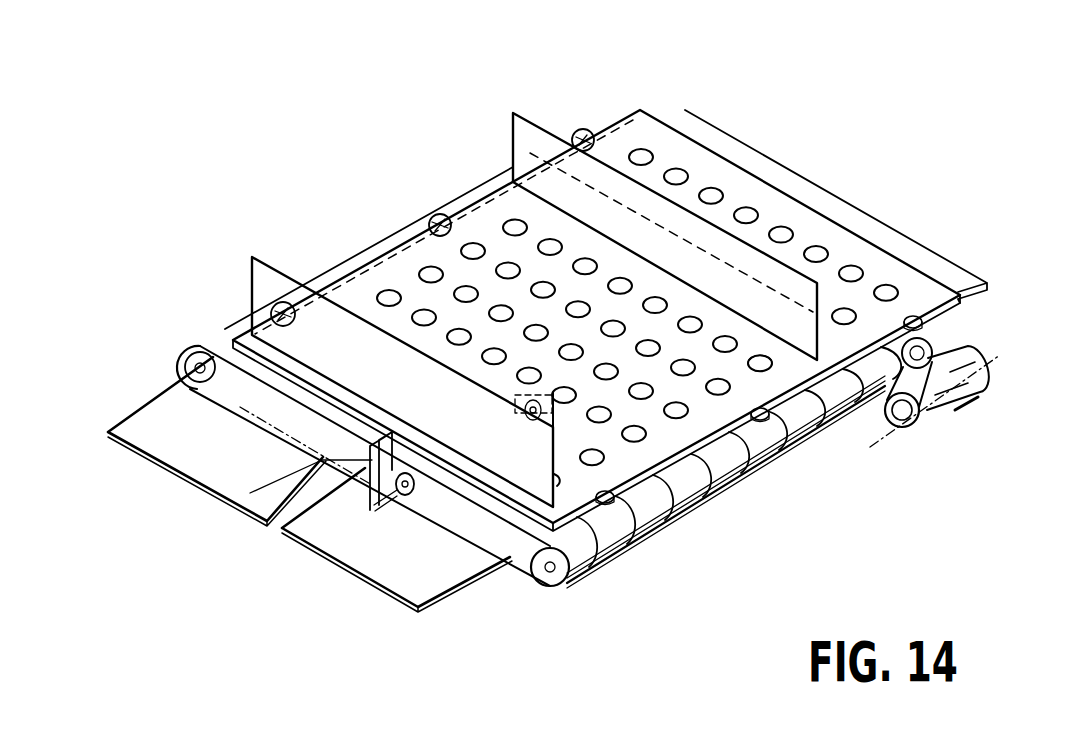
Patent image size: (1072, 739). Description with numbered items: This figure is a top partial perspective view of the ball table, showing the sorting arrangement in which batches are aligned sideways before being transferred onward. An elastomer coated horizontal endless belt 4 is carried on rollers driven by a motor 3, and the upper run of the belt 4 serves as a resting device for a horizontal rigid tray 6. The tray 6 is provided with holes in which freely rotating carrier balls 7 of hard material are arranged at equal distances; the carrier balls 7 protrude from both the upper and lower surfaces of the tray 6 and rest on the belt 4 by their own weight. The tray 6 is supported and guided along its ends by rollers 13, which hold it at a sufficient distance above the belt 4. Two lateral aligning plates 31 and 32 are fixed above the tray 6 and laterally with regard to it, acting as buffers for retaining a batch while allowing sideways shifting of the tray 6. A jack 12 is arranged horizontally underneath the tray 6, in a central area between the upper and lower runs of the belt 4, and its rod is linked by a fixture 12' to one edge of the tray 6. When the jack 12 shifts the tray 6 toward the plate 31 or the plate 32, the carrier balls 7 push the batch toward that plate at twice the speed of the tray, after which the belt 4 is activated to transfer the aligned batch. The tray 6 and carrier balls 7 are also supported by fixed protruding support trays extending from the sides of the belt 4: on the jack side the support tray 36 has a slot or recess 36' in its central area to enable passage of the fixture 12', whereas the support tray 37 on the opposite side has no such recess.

The motor 3 is at (968, 398).
The endless belt 4 is at (517, 582).
The tray 6 is at (676, 440).
The carrier balls 7 is at (770, 366).
The jack 12 is at (508, 514).
The fixture 12' is at (240, 534).
The rollers 13 is at (433, 216).
The lateral aligning plate 31 is at (262, 292).
The lateral aligning plate 32 is at (522, 115).
The support tray 36 is at (206, 523).
The slot or recess 36' is at (344, 551).
The support tray 37 is at (947, 270).